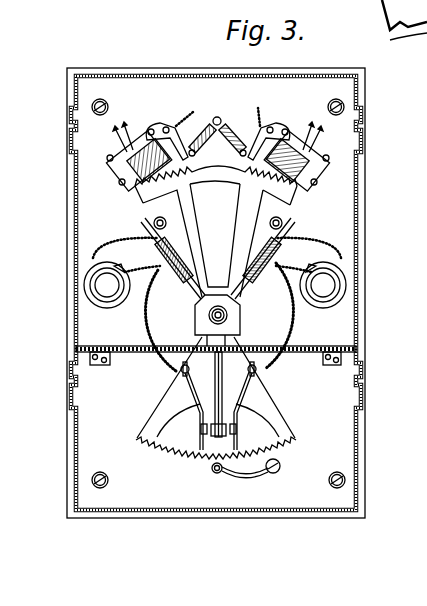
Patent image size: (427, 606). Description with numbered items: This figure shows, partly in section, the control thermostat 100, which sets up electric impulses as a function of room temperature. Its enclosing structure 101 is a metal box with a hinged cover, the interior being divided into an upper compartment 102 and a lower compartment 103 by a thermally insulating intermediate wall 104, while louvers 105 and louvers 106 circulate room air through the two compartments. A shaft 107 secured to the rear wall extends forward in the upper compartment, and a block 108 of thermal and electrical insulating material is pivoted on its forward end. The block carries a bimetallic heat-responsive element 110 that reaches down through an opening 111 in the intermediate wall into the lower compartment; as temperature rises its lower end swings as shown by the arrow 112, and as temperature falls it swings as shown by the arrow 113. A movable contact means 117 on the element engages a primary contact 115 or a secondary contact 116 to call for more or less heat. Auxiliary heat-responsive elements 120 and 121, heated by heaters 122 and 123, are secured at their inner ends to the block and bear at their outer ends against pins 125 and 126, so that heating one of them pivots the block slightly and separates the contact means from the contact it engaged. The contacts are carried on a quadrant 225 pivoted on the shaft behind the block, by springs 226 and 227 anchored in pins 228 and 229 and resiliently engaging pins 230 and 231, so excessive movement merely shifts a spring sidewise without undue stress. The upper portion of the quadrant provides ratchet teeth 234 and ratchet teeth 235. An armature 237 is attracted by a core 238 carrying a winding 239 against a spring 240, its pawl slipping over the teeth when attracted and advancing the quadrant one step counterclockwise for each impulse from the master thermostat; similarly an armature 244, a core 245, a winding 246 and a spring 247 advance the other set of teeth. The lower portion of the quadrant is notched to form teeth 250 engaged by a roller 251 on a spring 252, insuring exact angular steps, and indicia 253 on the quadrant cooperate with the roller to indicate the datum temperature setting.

The control thermostat 100 is at (183, 66).
The enclosing structure 101 is at (74, 236).
The upper compartment 102 is at (362, 208).
The lower compartment 103 is at (368, 403).
The intermediate wall 104 is at (122, 346).
The louvers 105 is at (68, 147).
The louvers 106 is at (70, 397).
The shaft 107 is at (213, 316).
The block 108 is at (236, 327).
The bimetallic heat-responsive element 110 is at (215, 384).
The opening 111 is at (224, 356).
The arrow 112 is at (184, 411).
The arrow 113 is at (250, 411).
The primary contact 115 is at (236, 430).
The secondary contact 116 is at (200, 430).
The movable contact means 117 is at (197, 456).
The auxiliary heat-responsive element 120 is at (285, 248).
The auxiliary heat-responsive element 121 is at (153, 226).
The heater 122 is at (272, 291).
The heater 123 is at (182, 268).
The pin 125 is at (285, 227).
The pin 126 is at (165, 221).
The quadrant 225 is at (268, 393).
The spring 226 is at (267, 403).
The spring 227 is at (200, 404).
The pin 228 is at (258, 372).
The pin 229 is at (181, 372).
The pin 230 is at (224, 472).
The pin 231 is at (205, 458).
The ratchet teeth 234 is at (205, 175).
The ratchet teeth 235 is at (290, 178).
The armature 237 is at (260, 150).
The core 238 is at (306, 170).
The winding 239 is at (293, 141).
The spring 240 is at (225, 154).
The armature 244 is at (186, 131).
The core 245 is at (128, 170).
The winding 246 is at (148, 158).
The spring 247 is at (216, 114).
The teeth 250 is at (280, 450).
The roller 251 is at (220, 476).
The spring 252 is at (262, 474).
The indicia 253 is at (290, 425).